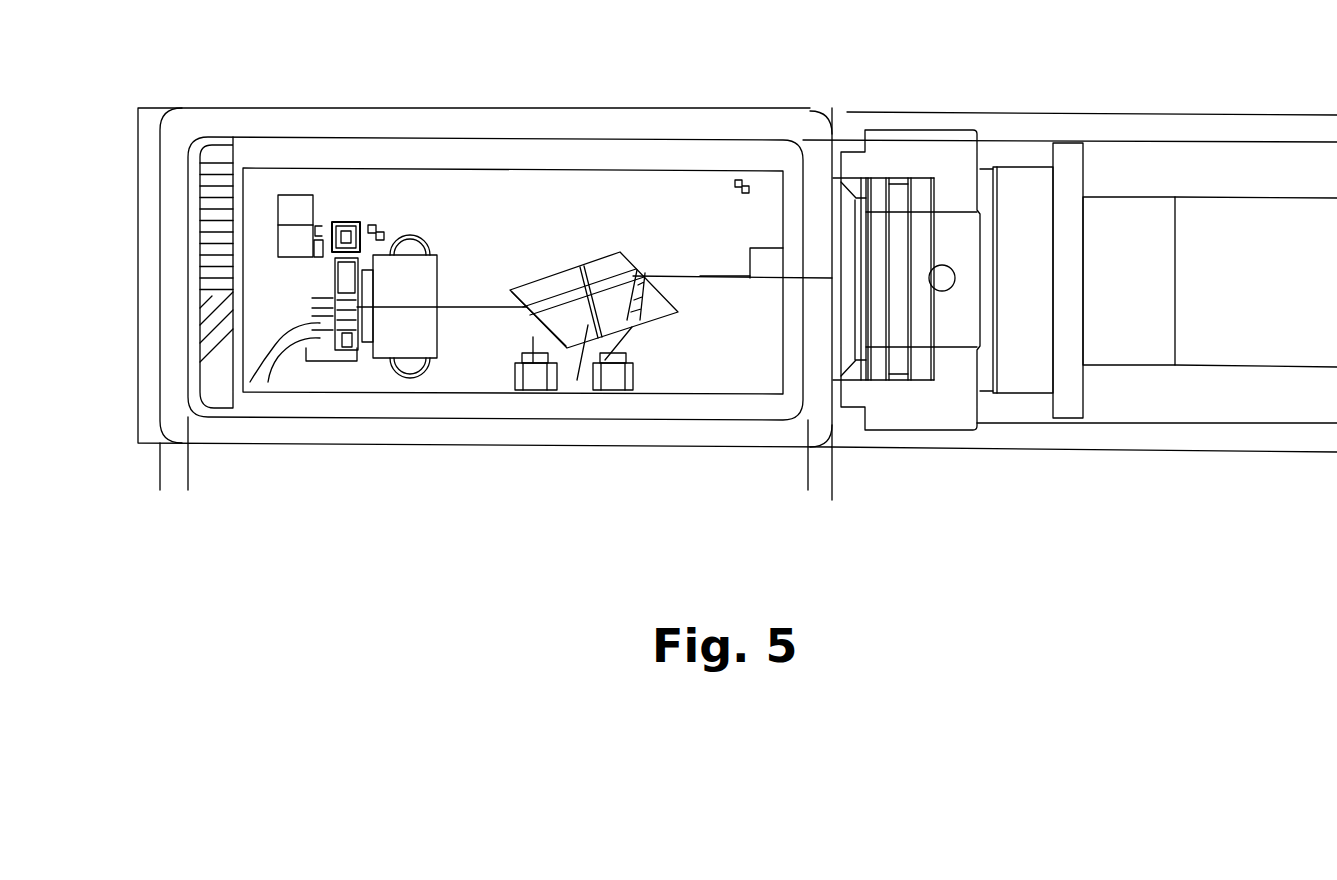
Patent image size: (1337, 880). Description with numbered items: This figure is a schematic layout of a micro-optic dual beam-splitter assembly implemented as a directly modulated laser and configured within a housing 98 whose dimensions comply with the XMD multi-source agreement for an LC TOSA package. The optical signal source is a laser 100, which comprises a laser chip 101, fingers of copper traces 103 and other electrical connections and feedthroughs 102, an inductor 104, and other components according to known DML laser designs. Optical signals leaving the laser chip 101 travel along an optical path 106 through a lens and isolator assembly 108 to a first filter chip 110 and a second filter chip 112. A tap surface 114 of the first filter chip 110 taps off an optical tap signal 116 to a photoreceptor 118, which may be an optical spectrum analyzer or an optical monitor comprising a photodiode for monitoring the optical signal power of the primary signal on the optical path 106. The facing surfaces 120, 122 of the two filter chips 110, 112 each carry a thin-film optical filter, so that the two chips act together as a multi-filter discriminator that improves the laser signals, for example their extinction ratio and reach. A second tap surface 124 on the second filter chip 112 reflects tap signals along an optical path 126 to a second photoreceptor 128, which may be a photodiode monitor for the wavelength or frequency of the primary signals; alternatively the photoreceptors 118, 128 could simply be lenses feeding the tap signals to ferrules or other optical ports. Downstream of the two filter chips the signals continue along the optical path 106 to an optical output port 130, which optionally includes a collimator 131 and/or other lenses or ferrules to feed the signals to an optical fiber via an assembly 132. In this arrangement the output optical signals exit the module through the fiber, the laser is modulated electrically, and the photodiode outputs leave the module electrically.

The housing 98 is at (577, 448).
The laser 100 is at (320, 364).
The laser chip 101 is at (350, 300).
The electrical connections and feedthroughs 102 is at (210, 260).
The fingers of copper traces 103 is at (260, 366).
The inductor 104 is at (348, 223).
The optical path 106 is at (482, 310).
The lens and isolator assembly 108 is at (427, 268).
The first filter chip 110 is at (547, 288).
The second filter chip 112 is at (608, 257).
The tap surface 114 is at (517, 298).
The optical tap signal 116 is at (533, 337).
The photoreceptor 118 is at (543, 365).
The facing surface 120 is at (577, 380).
The facing surface 122 is at (593, 275).
The second tap surface 124 is at (633, 262).
The optical path 126 is at (632, 327).
The second photoreceptor 128 is at (637, 373).
The optical output port 130 is at (736, 275).
The collimator 131 is at (770, 263).
The assembly 132 is at (902, 161).